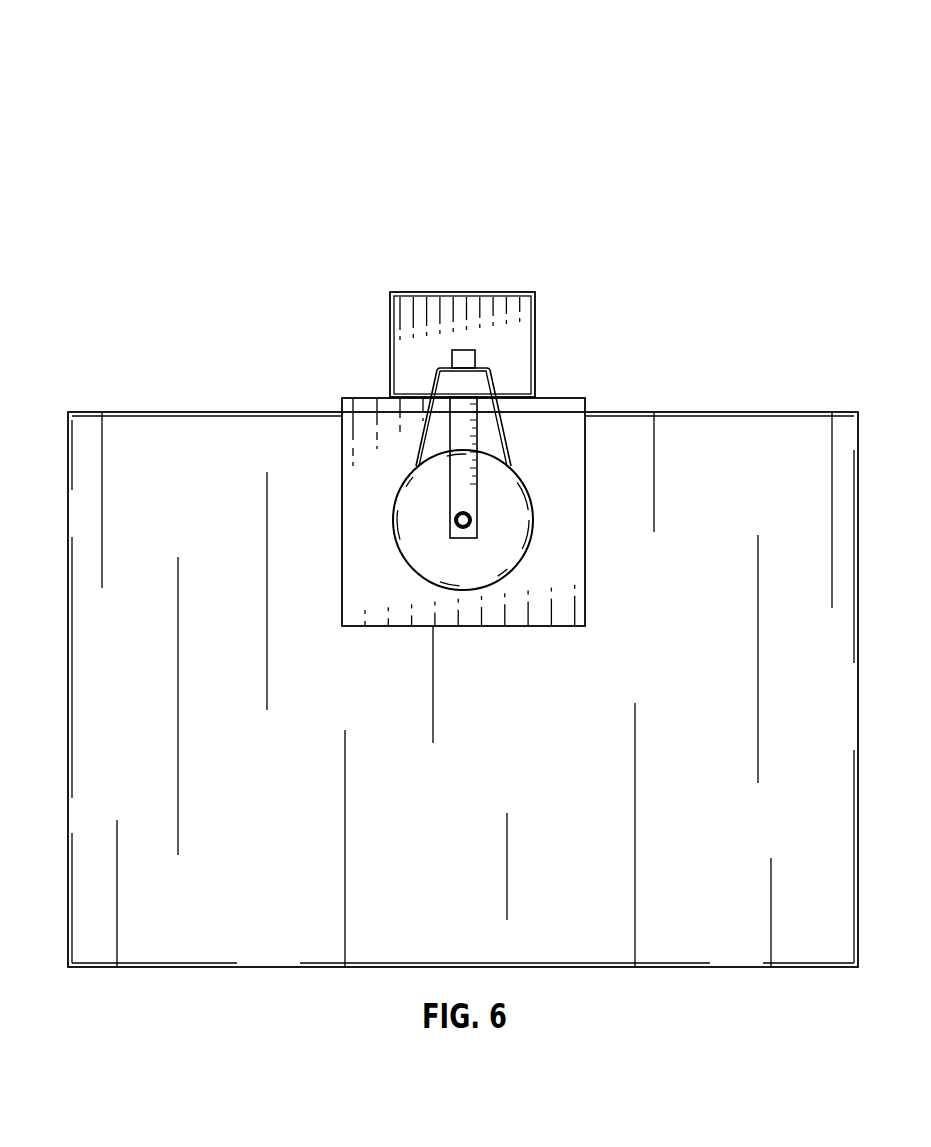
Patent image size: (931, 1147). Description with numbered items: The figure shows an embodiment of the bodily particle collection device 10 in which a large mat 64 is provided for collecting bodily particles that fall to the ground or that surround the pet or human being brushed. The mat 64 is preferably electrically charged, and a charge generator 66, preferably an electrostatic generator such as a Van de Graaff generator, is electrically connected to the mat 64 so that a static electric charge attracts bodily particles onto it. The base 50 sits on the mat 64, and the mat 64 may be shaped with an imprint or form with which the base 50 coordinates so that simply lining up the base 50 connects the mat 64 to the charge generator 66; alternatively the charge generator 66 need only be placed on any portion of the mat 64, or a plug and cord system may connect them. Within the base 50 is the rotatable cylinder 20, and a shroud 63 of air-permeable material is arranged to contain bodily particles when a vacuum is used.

The bodily particle collection device 10 is at (168, 70).
The cylinder 20 is at (417, 465).
The base 50 is at (360, 527).
The shroud 63 is at (498, 385).
The mat 64 is at (92, 421).
The charge generator 66 is at (442, 295).